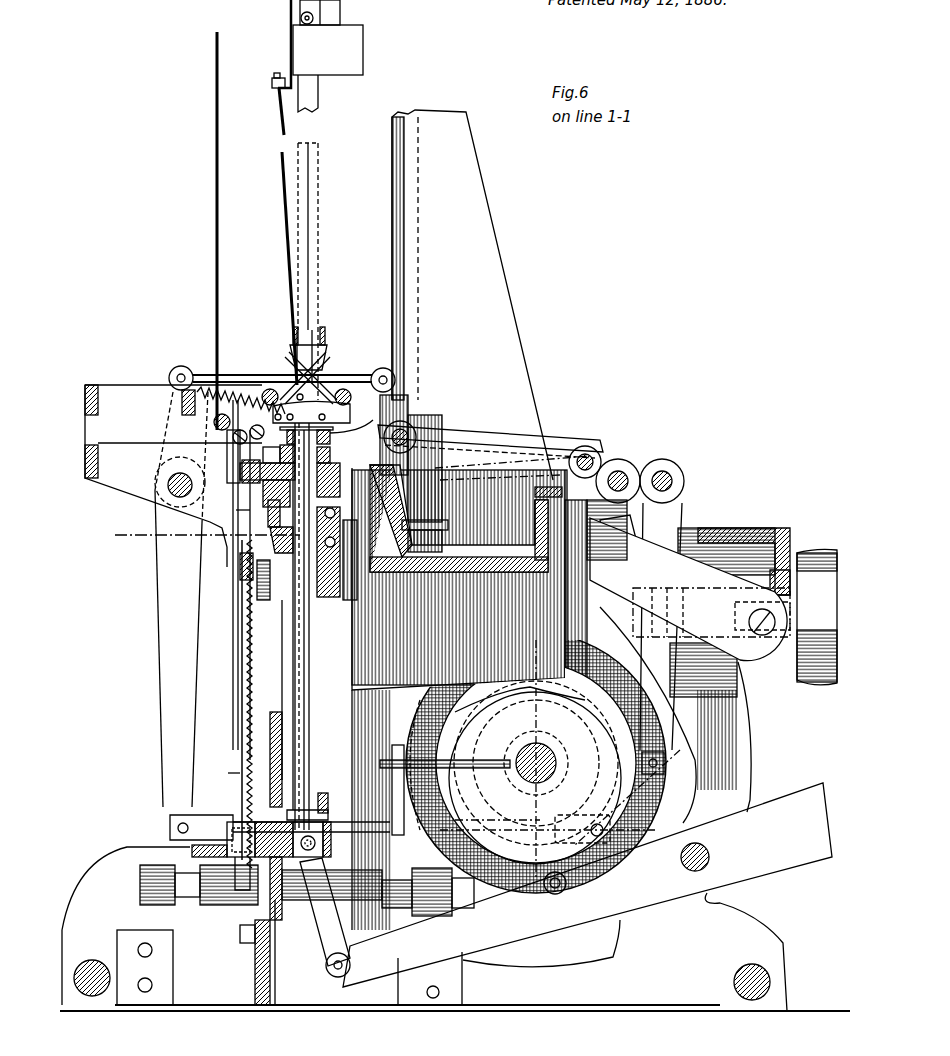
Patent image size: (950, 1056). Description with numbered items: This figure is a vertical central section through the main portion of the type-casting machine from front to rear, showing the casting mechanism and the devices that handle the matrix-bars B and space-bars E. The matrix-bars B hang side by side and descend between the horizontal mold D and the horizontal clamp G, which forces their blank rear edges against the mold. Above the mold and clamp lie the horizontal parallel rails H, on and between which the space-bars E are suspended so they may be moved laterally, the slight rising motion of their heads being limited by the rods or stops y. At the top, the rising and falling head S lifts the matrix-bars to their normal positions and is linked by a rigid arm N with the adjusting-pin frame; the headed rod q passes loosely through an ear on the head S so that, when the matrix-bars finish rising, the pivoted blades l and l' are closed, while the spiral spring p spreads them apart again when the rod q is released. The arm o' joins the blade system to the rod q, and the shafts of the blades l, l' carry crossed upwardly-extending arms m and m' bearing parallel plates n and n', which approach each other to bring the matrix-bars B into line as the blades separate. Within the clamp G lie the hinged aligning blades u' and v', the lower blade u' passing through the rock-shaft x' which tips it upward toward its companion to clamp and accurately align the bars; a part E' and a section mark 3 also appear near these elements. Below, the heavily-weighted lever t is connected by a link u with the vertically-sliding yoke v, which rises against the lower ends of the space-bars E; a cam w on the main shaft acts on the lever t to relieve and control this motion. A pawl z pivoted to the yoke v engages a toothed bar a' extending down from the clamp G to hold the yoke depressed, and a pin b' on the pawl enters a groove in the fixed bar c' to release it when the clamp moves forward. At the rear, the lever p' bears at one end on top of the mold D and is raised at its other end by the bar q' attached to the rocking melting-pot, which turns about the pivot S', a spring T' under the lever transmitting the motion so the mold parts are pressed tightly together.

The rigid arm N is at (227, 231).
The rising and falling head S is at (328, 37).
The matrix-bars B is at (308, 237).
The headed rod q is at (280, 229).
The section line 3 is at (211, 419).
The spiral spring p is at (241, 379).
The parallel plate n' is at (284, 323).
The parallel plate n is at (334, 333).
The upwardly-extending arm m' is at (299, 373).
The upwardly-extending arm m is at (319, 376).
The arm o' is at (280, 376).
The pivoted blade l' is at (265, 397).
The pivoted blade l is at (348, 397).
The rods or stops y is at (311, 615).
The horizontal parallel rails H is at (370, 420).
The upper aligning blade v' is at (279, 454).
The horizontal clamp G is at (267, 508).
The horizontal mold D is at (328, 522).
The lower aligning blade u' is at (197, 468).
The rock-shaft x' is at (252, 480).
The bar E' is at (234, 511).
The space-bars E is at (294, 620).
The toothed bar a' is at (232, 704).
The fixed bar c' is at (226, 765).
The pin b' is at (234, 821).
The pawl z is at (240, 858).
The vertically-sliding frame or yoke v is at (322, 839).
The link u is at (325, 917).
The cam w is at (530, 763).
The heavily-weighted lever t is at (599, 723).
The lever p' is at (490, 442).
The bar q' is at (512, 474).
The spring T' is at (457, 473).
The pivot S' is at (383, 667).